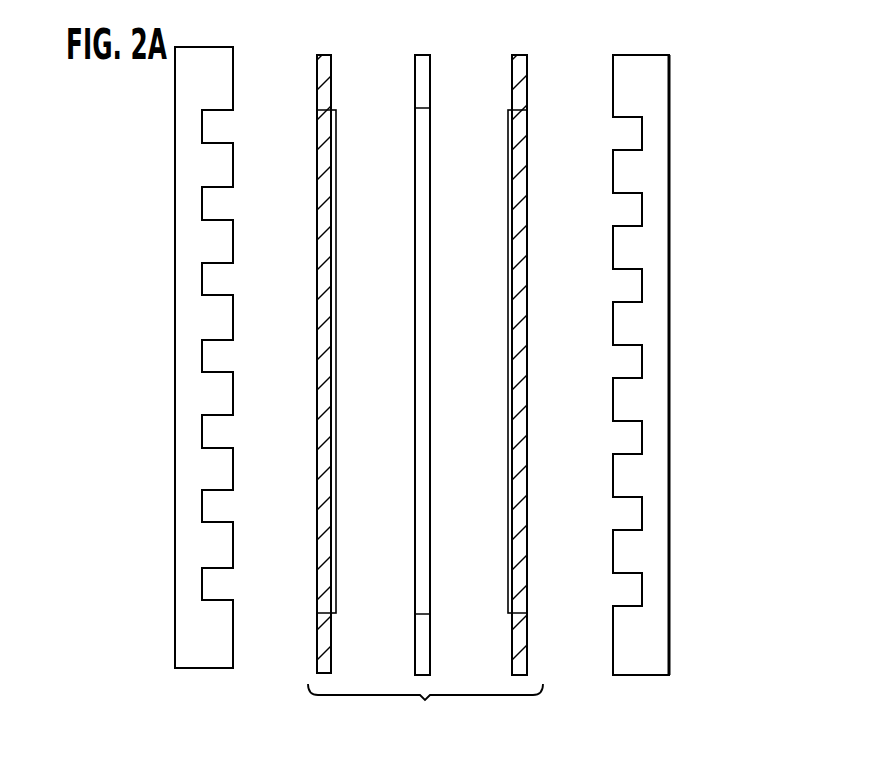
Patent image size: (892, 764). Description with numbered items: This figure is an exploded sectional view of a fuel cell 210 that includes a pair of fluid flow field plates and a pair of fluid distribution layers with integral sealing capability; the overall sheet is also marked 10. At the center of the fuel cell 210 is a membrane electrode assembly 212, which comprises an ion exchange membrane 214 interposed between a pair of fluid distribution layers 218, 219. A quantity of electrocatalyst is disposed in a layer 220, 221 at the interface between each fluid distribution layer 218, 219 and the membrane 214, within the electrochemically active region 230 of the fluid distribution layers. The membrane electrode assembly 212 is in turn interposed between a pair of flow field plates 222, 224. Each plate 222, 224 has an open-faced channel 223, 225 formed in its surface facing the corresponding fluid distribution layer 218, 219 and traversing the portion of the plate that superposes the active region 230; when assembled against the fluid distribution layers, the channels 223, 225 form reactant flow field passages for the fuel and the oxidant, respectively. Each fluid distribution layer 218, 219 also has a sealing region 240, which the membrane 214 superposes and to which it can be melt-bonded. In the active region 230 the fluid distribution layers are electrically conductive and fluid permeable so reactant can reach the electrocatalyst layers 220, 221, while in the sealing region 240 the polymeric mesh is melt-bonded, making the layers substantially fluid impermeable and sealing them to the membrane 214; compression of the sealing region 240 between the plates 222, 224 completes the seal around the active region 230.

The electrochemical cell assembly 10 is at (423, 363).
The fuel cell 210 is at (663, 45).
The membrane electrode assembly 212 is at (425, 705).
The ion exchange membrane 214 is at (416, 678).
The fluid distribution layer 218 is at (312, 670).
The fluid distribution layer 219 is at (533, 675).
The electrocatalyst layer 220 is at (338, 137).
The electrocatalyst layer 221 is at (510, 134).
The flow field plate 222 is at (186, 653).
The open-faced channel 223 is at (217, 510).
The flow field plate 224 is at (652, 667).
The open-faced channel 225 is at (633, 593).
The electrochemically active region 230 is at (318, 148).
The sealing region 240 is at (318, 76).